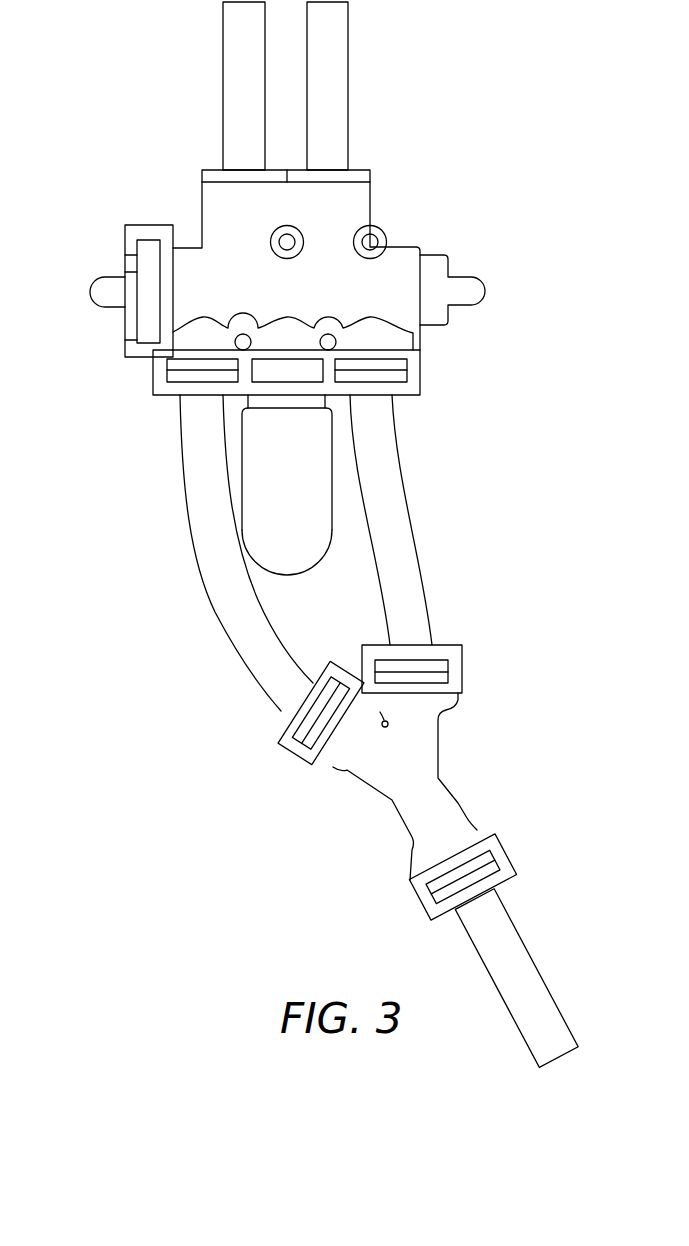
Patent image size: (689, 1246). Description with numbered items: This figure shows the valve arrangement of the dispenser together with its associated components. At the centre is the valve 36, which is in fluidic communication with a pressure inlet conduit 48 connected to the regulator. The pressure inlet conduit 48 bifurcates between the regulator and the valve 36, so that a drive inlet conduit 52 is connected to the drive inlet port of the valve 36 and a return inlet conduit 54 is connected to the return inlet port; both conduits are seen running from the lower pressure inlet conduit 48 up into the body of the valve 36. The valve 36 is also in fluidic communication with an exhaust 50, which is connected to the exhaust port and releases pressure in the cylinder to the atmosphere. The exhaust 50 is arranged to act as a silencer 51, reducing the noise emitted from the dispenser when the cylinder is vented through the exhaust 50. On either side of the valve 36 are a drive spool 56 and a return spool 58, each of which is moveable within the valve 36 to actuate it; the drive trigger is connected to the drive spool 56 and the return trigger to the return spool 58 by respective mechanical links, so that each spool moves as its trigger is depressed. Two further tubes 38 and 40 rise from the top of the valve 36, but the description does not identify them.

The valve 36 is at (210, 272).
The first tube 38 is at (223, 95).
The second tube 40 is at (348, 95).
The pressure inlet conduit 48 is at (538, 968).
The exhaust 50 is at (276, 498).
The silencer 51 is at (307, 568).
The drive inlet conduit 52 is at (412, 517).
The return inlet conduit 54 is at (197, 552).
The drive spool 56 is at (484, 292).
The return spool 58 is at (92, 296).